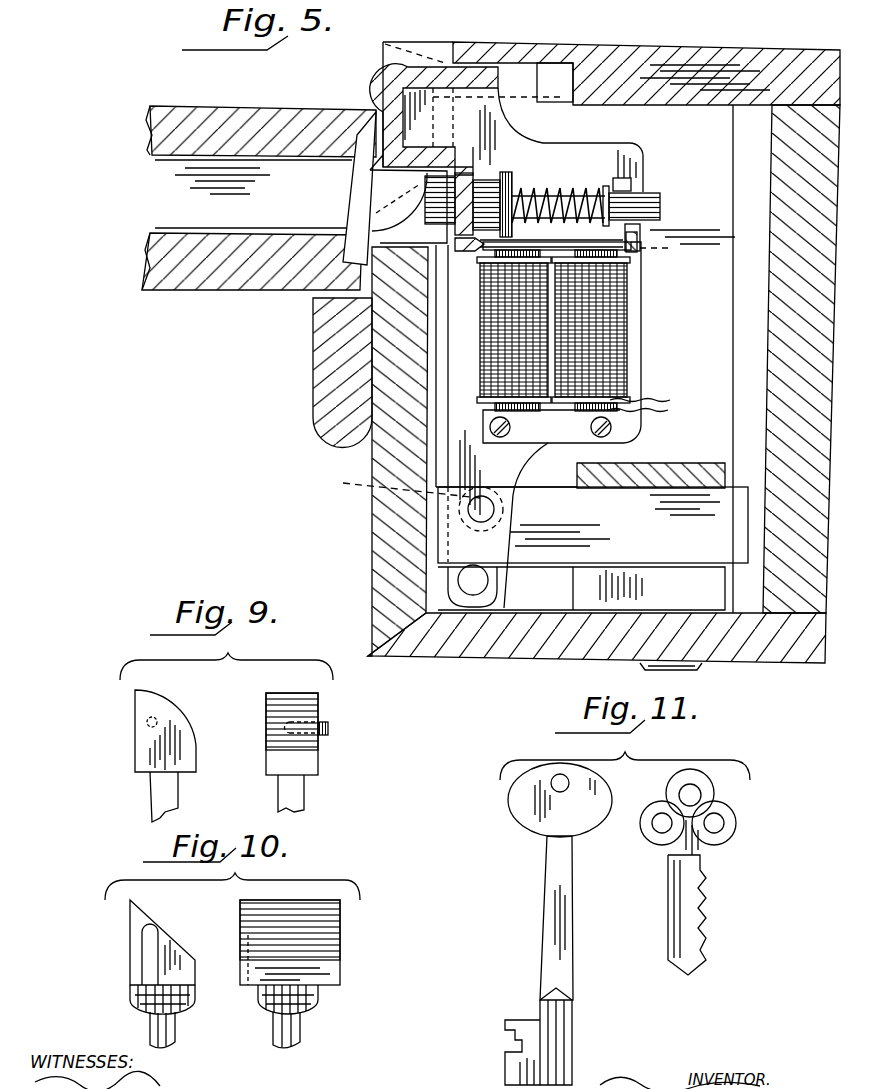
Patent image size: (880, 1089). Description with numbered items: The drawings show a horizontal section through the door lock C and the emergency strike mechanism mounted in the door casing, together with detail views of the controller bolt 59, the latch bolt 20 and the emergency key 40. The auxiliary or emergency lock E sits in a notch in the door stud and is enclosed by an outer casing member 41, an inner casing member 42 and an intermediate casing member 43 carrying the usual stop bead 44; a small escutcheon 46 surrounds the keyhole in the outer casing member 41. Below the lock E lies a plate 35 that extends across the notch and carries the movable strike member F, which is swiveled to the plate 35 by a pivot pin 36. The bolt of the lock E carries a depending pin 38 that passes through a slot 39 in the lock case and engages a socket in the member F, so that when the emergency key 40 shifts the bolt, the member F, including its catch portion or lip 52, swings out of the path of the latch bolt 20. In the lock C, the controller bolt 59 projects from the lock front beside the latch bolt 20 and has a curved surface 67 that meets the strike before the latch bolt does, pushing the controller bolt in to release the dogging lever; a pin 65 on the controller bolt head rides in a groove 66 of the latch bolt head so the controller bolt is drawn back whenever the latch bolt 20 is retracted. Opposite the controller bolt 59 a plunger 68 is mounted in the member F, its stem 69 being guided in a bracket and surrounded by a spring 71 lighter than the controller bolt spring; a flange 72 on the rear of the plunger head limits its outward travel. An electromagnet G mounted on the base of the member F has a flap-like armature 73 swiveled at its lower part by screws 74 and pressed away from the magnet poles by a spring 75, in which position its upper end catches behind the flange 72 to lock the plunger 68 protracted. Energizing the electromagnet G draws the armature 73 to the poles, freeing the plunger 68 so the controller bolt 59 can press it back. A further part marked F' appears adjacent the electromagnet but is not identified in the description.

In FIG. 5, the inner casing member 42 is at (655, 50).
In FIG. 5, the plate 35 is at (711, 320).
In FIG. 5, the outer casing member 41 is at (463, 657).
In FIG. 5, the intermediate casing member 43 is at (378, 516).
In FIG. 5, the stop bead 44 is at (315, 394).
In FIG. 5, the escutcheon 46 is at (700, 668).
In FIG. 5, the catch portion or lip 52 is at (388, 157).
In FIG. 5, the controller bolt 59 is at (408, 206).
In FIG. 9, the controller bolt 59 is at (308, 748).
In FIG. 5, the curved surface 67 is at (397, 220).
In FIG. 9, the curved surface 67 is at (172, 708).
In FIG. 5, the plunger 68 is at (487, 178).
In FIG. 5, the flange 72 is at (505, 183).
In FIG. 5, the spring 71 is at (553, 190).
In FIG. 5, the stem 69 is at (590, 193).
In FIG. 5, the latch bolt 20 is at (622, 185).
In FIG. 10, the latch bolt 20 is at (160, 940).
In FIG. 5, the spring 75 is at (548, 249).
In FIG. 5, the swinging flap armature 73 is at (612, 245).
In FIG. 5, the screws 74 is at (463, 302).
In FIG. 5, the depending pin 38 is at (394, 485).
In FIG. 5, the slot 39 is at (503, 509).
In FIG. 5, the pivot pin 36 is at (472, 580).
In FIG. 9, the pin 65 is at (330, 725).
In FIG. 10, the groove 66 is at (143, 945).
In FIG. 11, the emergency key 40 is at (558, 871).
In FIG. 5, the lock C is at (259, 198).
In FIG. 5, the auxiliary or emergency lock E is at (592, 526).
In FIG. 5, the movable part of the strike F is at (480, 311).
In FIG. 5, the electromagnet G is at (627, 318).
In FIG. 5, the conducting wires F' is at (647, 398).